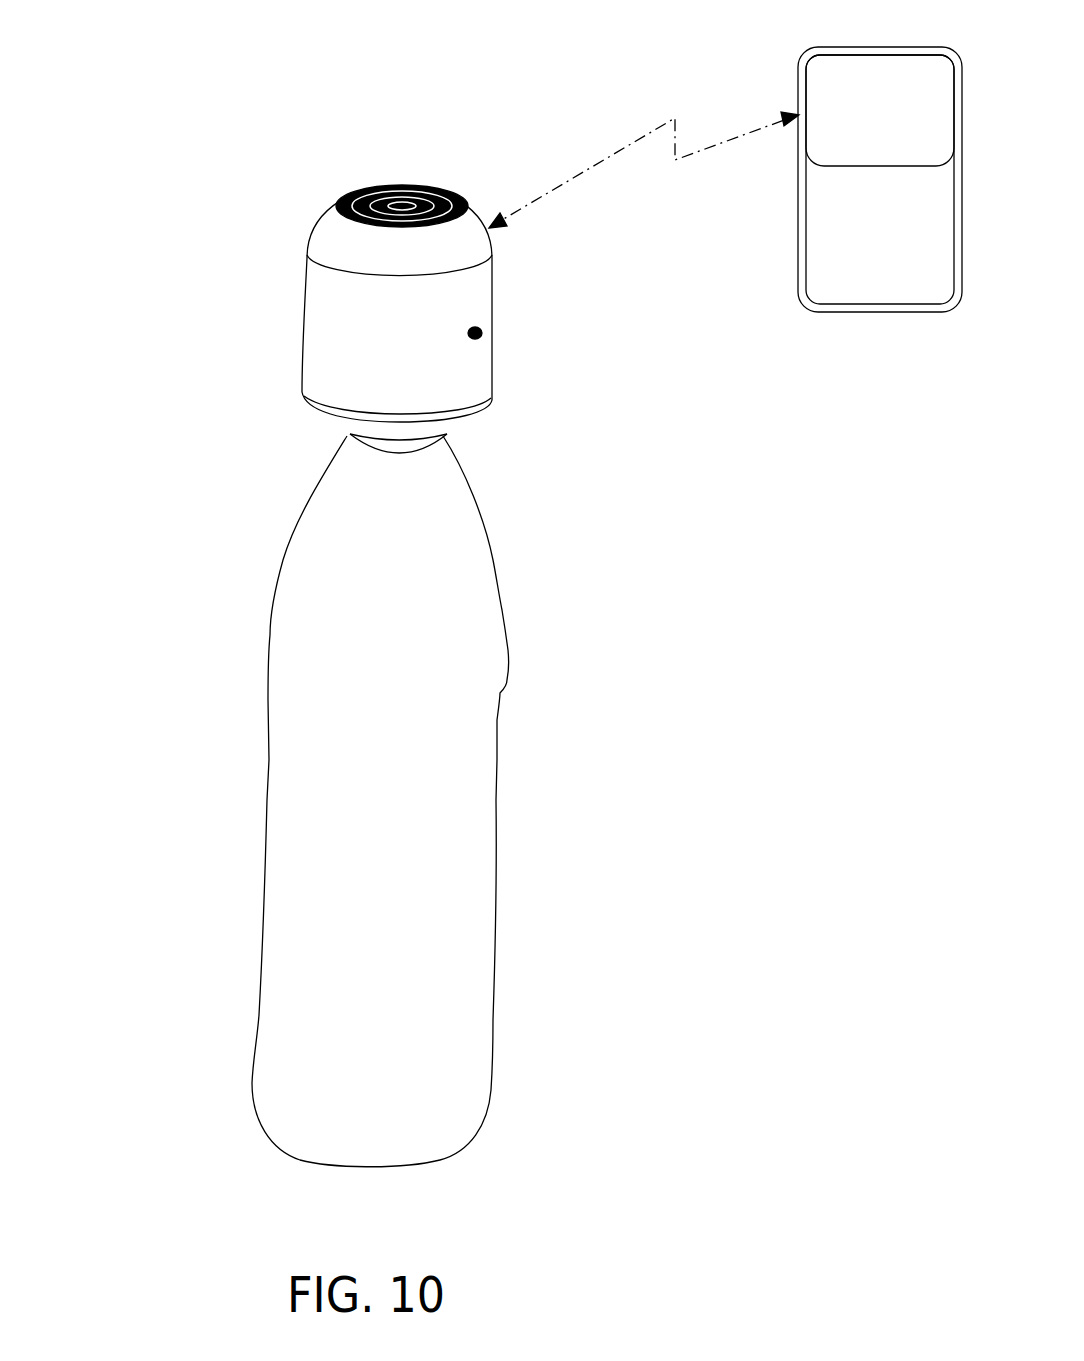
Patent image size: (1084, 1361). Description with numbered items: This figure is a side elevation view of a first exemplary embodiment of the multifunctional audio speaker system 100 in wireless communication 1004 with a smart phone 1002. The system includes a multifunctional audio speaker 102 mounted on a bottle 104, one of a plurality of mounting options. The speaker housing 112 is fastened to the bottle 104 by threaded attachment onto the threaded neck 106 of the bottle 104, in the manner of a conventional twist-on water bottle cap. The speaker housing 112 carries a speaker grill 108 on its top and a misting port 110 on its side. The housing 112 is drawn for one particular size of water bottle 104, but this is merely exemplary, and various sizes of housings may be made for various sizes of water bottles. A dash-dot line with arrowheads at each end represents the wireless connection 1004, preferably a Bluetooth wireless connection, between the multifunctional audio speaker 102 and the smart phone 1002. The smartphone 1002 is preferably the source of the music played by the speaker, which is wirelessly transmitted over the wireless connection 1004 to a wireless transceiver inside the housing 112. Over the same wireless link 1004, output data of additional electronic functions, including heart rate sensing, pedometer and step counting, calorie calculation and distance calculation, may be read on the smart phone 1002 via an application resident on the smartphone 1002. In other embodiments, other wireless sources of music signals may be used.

The multifunctional audio speaker system 100 is at (226, 64).
The multifunctional audio speaker 102 is at (285, 310).
The bottle 104 is at (322, 614).
The threaded neck 106 is at (350, 432).
The speaker grill 108 is at (363, 186).
The misting port 110 is at (483, 325).
The speaker housing 112 is at (453, 376).
The smart phone 1002 is at (887, 300).
The wireless communication 1004 is at (652, 130).